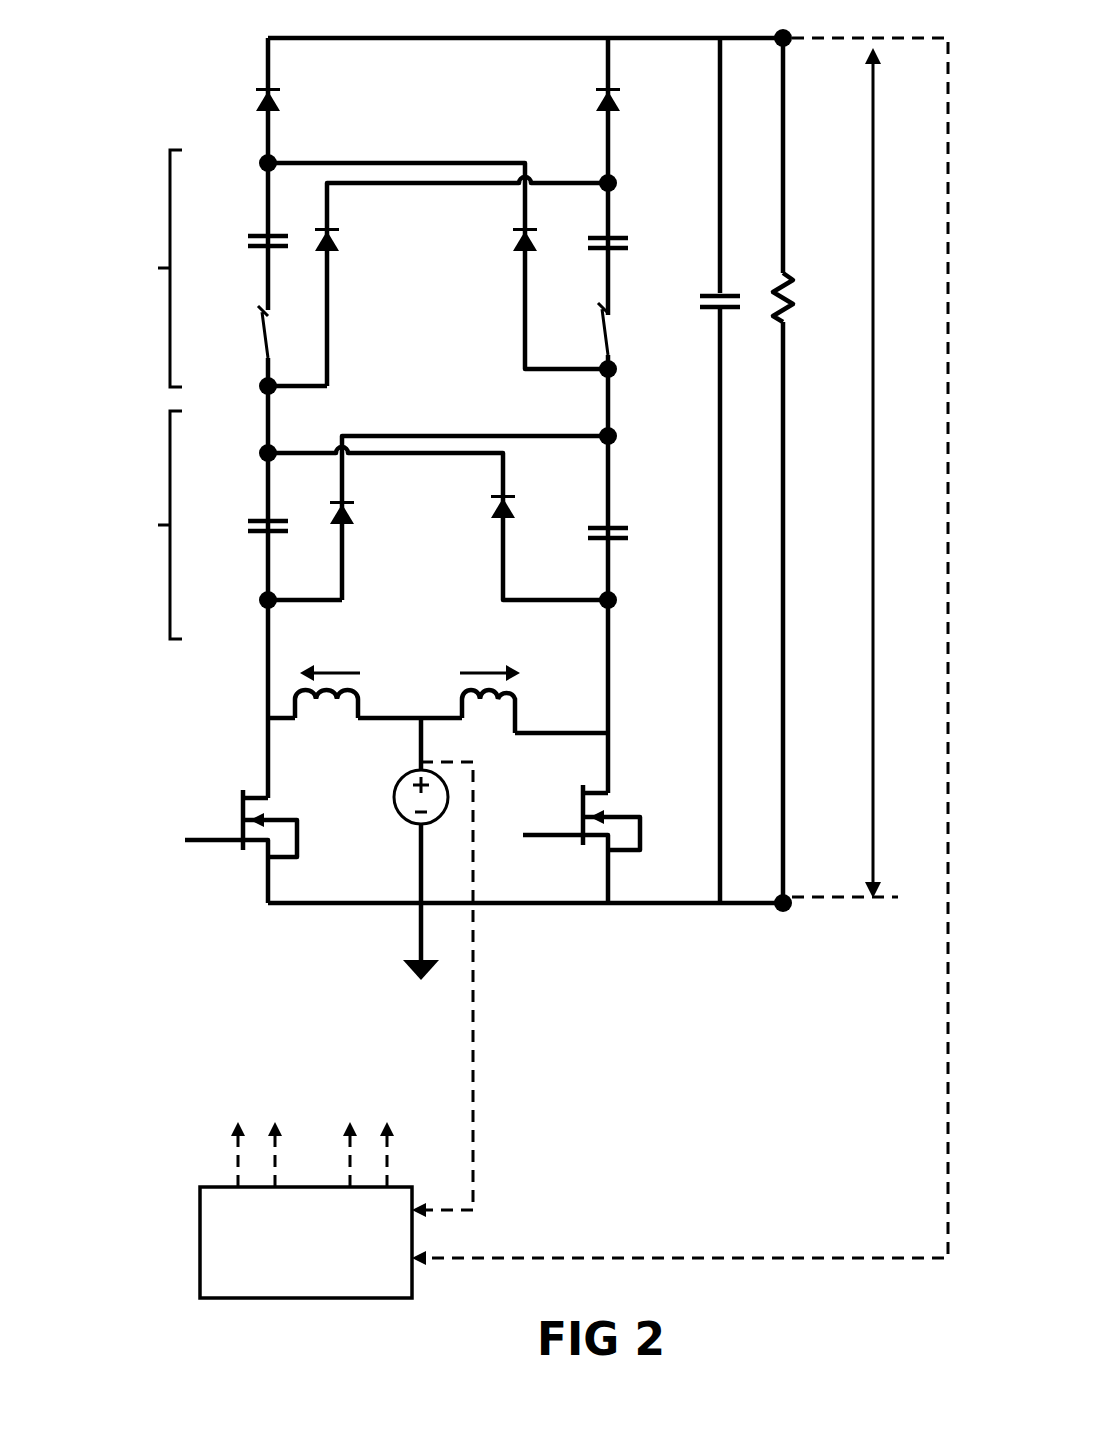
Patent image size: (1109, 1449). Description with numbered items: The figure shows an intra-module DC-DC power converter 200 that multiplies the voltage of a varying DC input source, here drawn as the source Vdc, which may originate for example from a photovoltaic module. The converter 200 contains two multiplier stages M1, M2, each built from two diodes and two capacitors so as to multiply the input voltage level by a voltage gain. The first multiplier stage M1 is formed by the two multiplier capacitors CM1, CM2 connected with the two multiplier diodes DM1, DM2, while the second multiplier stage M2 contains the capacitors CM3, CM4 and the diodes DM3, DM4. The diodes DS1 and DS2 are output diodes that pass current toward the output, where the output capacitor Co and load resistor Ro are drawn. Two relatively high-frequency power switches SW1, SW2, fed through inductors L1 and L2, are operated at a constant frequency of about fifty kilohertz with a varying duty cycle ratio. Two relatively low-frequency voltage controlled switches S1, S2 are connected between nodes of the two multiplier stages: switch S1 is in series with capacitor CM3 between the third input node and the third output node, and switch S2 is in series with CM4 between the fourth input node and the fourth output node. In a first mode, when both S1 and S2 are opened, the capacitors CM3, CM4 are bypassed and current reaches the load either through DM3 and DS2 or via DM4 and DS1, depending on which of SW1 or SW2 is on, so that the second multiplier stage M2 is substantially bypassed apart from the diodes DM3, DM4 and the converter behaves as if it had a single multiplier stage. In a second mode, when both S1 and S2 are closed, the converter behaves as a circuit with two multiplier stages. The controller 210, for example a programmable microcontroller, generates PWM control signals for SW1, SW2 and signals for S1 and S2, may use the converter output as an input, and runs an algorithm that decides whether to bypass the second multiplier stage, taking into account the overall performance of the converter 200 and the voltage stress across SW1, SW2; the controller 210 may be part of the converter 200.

The DC-DC power converter 200 is at (138, 1287).
The controller 210 is at (200, 1212).
The output diode DS1 is at (299, 102).
The output diode DS2 is at (639, 102).
The multiplier diode DM1 is at (374, 516).
The multiplier diode DM2 is at (536, 510).
The multiplier diode DM3 is at (360, 242).
The multiplier diode DM4 is at (550, 256).
The multiplier capacitor CM1 is at (239, 511).
The multiplier capacitor CM2 is at (629, 554).
The multiplier capacitor CM3 is at (239, 242).
The multiplier capacitor CM4 is at (629, 229).
The output capacitor Co is at (705, 285).
The load resistor Ro is at (800, 279).
The low frequency voltage controlled switch S1 is at (240, 332).
The low frequency voltage controlled switch S2 is at (628, 329).
The inductor L1 is at (327, 695).
The inductor L2 is at (490, 695).
The DC voltage source Vdc is at (394, 849).
The high-frequency power switch SW1 is at (224, 846).
The high-frequency power switch SW2 is at (565, 844).
The multiplier stage M1 is at (131, 525).
The multiplier stage M2 is at (131, 268).